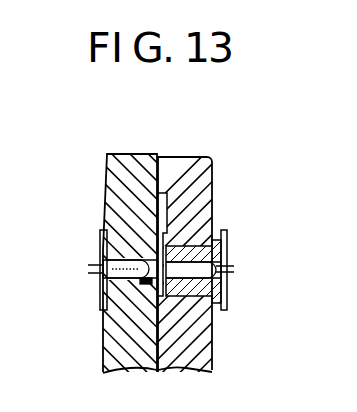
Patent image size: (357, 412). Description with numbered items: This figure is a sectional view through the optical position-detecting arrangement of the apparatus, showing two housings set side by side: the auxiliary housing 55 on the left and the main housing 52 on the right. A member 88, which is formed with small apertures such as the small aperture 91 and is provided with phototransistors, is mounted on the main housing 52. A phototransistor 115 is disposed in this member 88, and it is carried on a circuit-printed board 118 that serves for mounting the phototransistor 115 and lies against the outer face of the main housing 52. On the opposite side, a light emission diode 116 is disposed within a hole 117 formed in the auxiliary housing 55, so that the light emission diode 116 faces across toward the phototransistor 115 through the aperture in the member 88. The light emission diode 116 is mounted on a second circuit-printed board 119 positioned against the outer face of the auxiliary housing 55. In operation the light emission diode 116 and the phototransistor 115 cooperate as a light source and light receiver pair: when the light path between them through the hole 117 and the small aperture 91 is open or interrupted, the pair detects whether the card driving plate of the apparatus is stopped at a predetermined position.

The auxiliary housing 55 is at (131, 163).
The main housing 52 is at (188, 163).
The small aperture 91 is at (210, 221).
The member 88 is at (222, 238).
The phototransistor 115 is at (227, 257).
The light emission diode 116 is at (133, 260).
The hole 117 is at (152, 279).
The circuit-printed board 118 is at (226, 306).
The circuit-printed board 119 is at (101, 295).